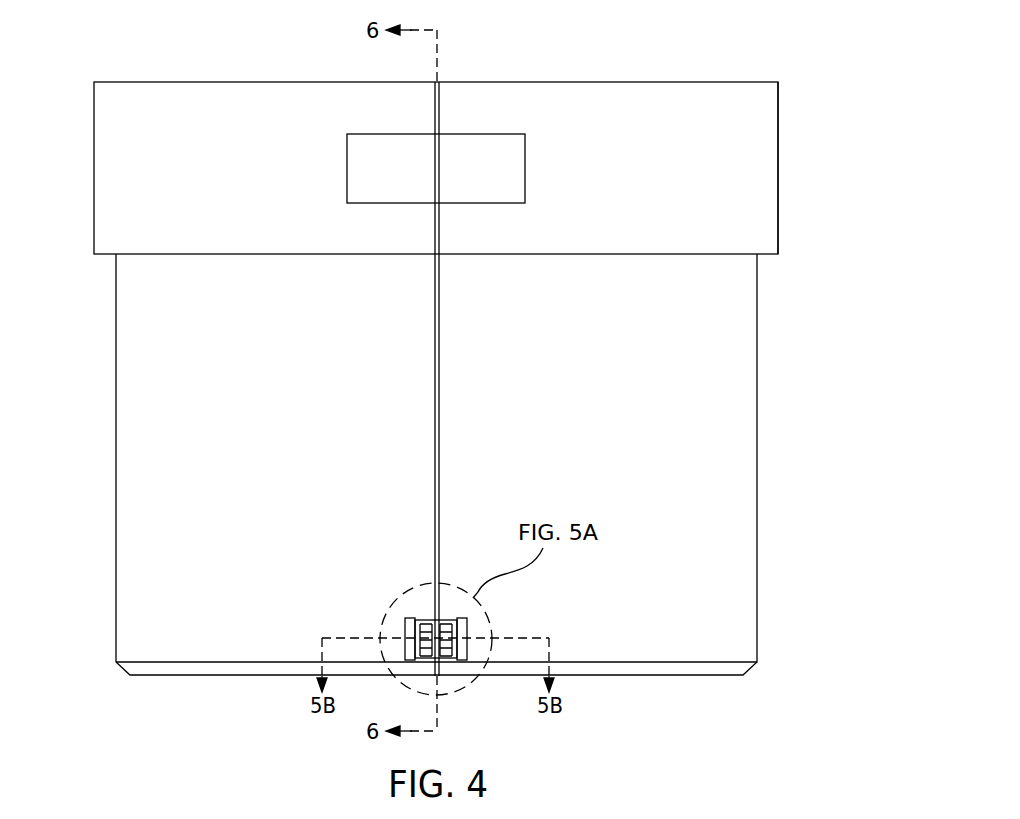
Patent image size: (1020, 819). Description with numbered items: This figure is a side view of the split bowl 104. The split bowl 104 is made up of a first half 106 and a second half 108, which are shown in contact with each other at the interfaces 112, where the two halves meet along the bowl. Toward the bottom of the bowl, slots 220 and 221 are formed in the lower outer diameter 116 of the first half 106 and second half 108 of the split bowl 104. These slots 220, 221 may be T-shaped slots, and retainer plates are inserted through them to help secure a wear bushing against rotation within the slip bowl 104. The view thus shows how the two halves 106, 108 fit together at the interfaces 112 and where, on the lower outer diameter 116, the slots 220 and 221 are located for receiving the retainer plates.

The split bowl 104 is at (784, 56).
The first half 106 is at (94, 180).
The second half 108 is at (778, 170).
The interfaces 112 is at (440, 82).
The lower outer diameter 116 is at (757, 482).
The slot 220 is at (410, 617).
The slot 221 is at (468, 617).